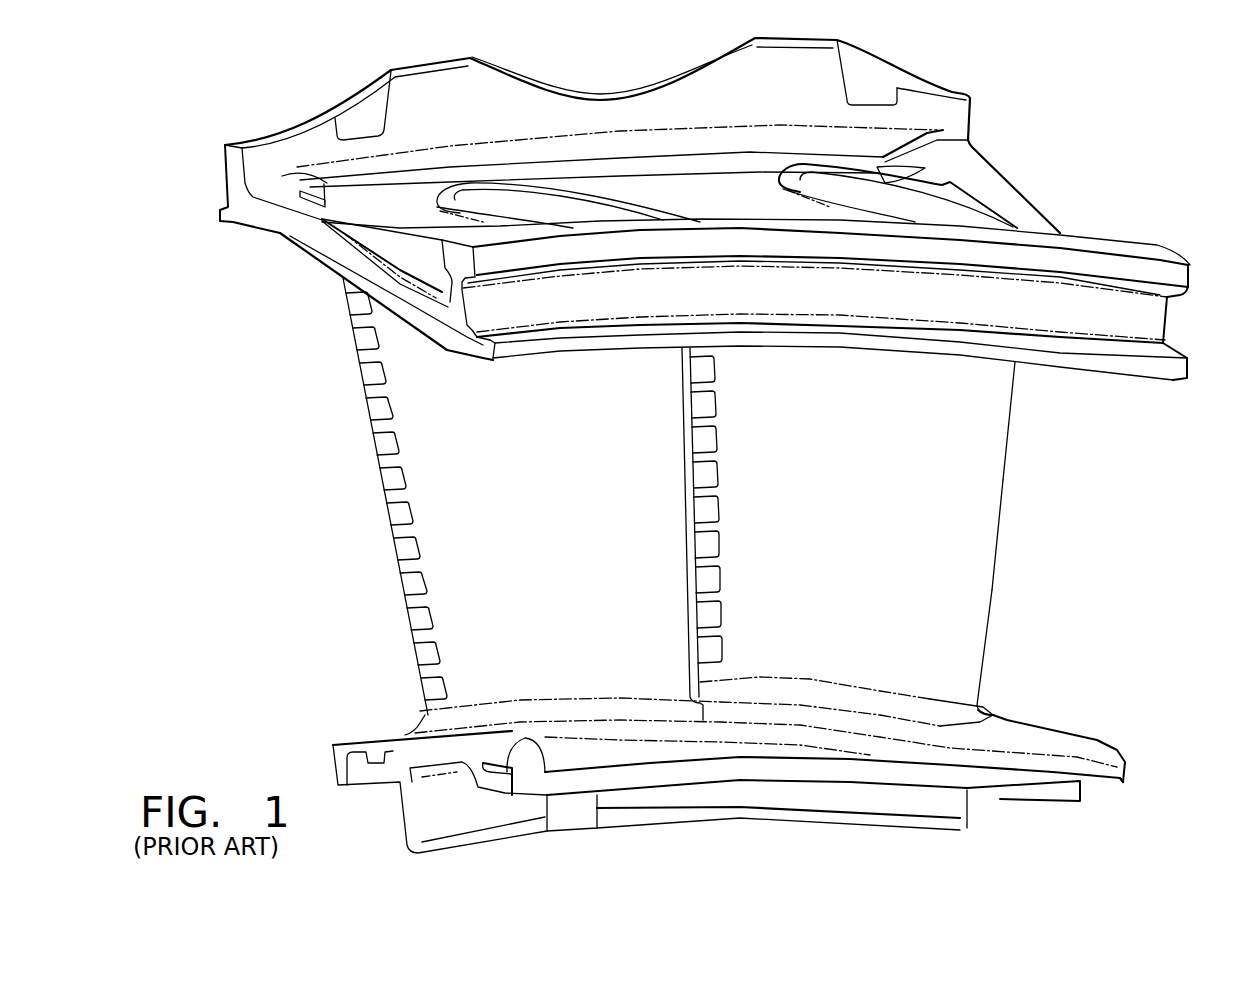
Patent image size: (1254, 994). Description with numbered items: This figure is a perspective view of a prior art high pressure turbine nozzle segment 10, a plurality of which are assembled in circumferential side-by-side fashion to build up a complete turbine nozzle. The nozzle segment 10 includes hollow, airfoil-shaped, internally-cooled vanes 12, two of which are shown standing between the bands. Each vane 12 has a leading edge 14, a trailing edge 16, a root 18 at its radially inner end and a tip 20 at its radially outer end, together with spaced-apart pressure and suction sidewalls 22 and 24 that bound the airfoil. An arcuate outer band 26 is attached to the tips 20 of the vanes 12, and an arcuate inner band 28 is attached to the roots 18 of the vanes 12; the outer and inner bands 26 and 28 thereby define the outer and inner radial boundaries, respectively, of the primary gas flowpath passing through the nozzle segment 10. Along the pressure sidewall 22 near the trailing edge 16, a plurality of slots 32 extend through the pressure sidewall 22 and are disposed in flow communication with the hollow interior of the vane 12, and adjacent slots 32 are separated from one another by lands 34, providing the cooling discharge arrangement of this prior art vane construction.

The nozzle segment 10 is at (235, 112).
The vane 12 is at (532, 561).
The leading edge 14 is at (988, 600).
The trailing edge 16 is at (388, 533).
The root 18 is at (512, 697).
The tip 20 is at (375, 311).
The pressure sidewall 22 is at (962, 488).
The suction sidewall 24 is at (1004, 445).
The outer band 26 is at (1121, 310).
The inner band 28 is at (1037, 728).
The slot 32 is at (361, 407).
The land 34 is at (383, 425).